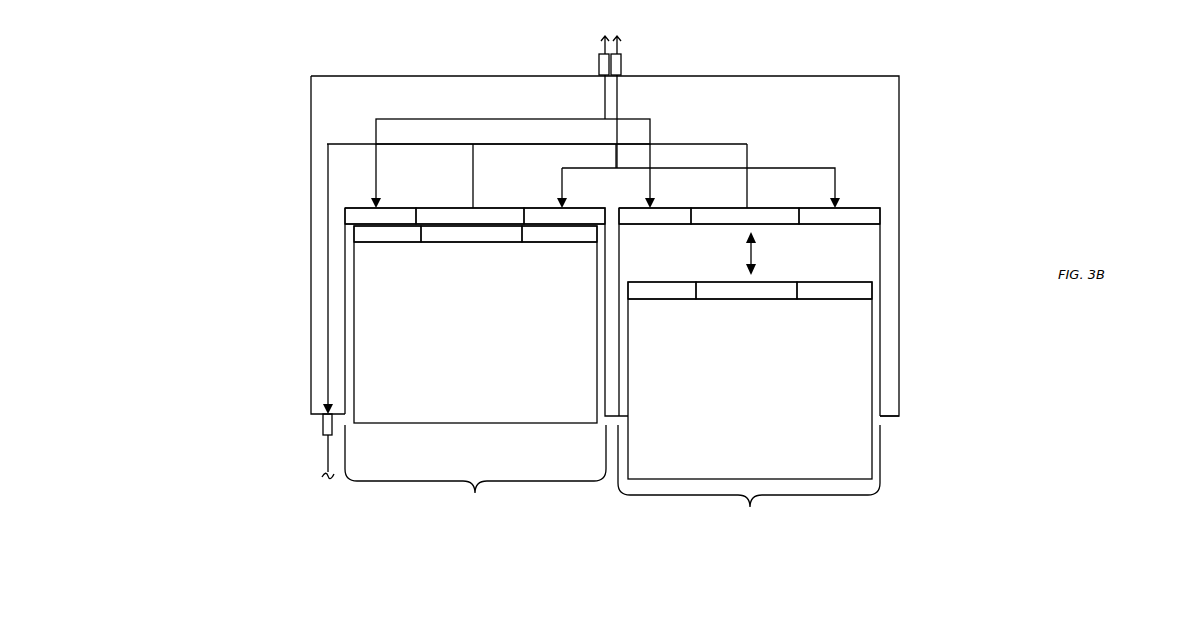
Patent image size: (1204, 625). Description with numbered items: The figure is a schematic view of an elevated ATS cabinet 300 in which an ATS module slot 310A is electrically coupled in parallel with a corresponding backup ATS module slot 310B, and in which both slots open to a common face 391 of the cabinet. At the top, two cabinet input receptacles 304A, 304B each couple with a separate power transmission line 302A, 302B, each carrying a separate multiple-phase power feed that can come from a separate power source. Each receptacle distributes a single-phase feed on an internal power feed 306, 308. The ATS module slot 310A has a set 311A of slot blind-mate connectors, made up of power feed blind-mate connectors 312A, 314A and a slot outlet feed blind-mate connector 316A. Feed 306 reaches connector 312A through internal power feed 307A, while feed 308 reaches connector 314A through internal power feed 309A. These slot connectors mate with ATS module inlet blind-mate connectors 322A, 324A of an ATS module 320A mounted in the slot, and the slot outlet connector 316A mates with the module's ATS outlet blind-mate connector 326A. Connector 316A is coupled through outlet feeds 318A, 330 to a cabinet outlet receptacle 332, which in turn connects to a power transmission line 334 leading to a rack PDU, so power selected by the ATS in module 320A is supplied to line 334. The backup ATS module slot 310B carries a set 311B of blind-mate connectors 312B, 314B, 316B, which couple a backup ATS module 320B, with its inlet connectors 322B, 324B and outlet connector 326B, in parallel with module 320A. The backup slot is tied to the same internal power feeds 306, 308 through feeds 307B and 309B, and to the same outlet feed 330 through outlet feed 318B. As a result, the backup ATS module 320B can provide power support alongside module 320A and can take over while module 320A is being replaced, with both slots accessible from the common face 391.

The ATS cabinet 300 is at (605, 246).
The power transmission line 302A is at (603, 40).
The power transmission line 302B is at (620, 40).
The cabinet input receptacle 304A is at (599, 62).
The cabinet input receptacle 304B is at (621, 62).
The internal power feed 306 is at (605, 95).
The internal power feed 308 is at (617, 101).
The internal power feed 307A is at (393, 119).
The feed 307B is at (652, 128).
The internal power feed 309A is at (562, 181).
The feed 309B is at (800, 168).
The ATS module slot 310A is at (475, 471).
The backup ATS module slot 310B is at (749, 478).
The set of slot blind-mate connectors 311A is at (327, 213).
The set of blind-mate connectors 311B is at (907, 213).
The power feed blind-mate connector 312A is at (380, 216).
The blind-mate connector 312B is at (655, 216).
The power feed blind-mate connector 314A is at (564, 216).
The blind-mate connector 314B is at (839, 216).
The slot outlet feed blind-mate connector 316A is at (470, 216).
The blind-mate connector 316B is at (745, 216).
The outlet feed 318A is at (473, 171).
The outlet feed 318B is at (747, 144).
The ATS module 320A is at (475, 324).
The backup ATS module 320B is at (750, 380).
The ATS module inlet blind-mate connector 322A is at (387, 234).
The ATS module inlet blind-mate connector 322B is at (662, 290).
The ATS module inlet blind-mate connector 324A is at (559, 234).
The ATS module inlet blind-mate connector 324B is at (834, 290).
The ATS outlet blind-mate connector 326A is at (471, 234).
The ATS outlet blind-mate connector 326B is at (746, 290).
The outlet feed 330 is at (328, 258).
The cabinet outlet receptacle 332 is at (323, 425).
The power transmission line 334 is at (328, 458).
The common face 391 is at (918, 415).